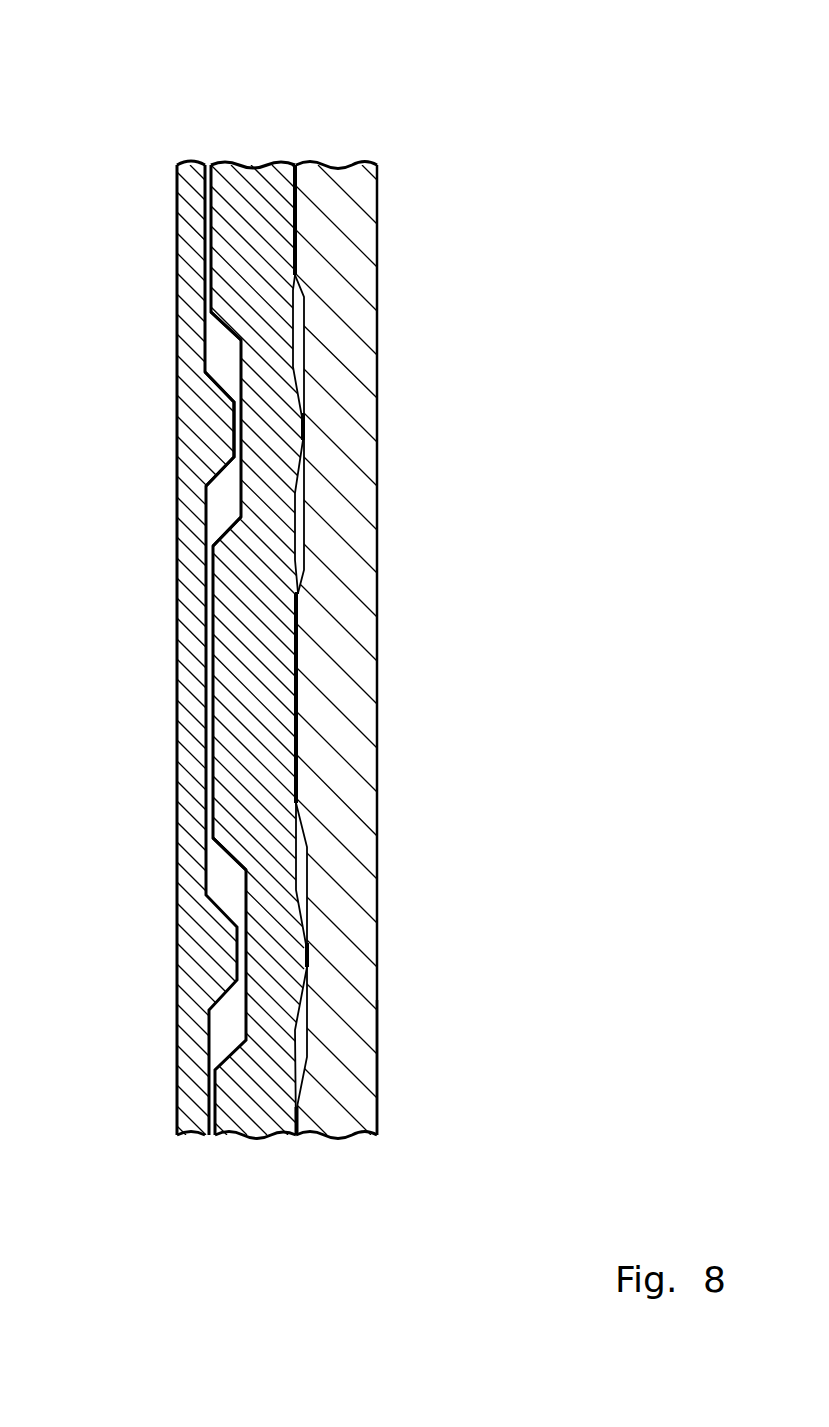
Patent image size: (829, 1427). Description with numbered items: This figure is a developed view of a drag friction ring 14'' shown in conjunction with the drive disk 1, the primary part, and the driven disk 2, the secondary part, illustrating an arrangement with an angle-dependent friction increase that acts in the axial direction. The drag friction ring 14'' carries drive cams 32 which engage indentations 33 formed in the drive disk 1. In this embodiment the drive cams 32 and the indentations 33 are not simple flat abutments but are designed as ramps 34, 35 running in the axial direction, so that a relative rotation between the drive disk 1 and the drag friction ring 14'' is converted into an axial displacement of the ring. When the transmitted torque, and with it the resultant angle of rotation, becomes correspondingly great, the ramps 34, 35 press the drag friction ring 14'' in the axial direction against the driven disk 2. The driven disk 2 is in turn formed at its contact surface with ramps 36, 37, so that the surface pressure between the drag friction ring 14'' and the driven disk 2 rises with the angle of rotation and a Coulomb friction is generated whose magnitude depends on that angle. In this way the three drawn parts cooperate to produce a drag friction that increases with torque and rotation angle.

The drive disk 1 is at (190, 197).
The drag friction ring 14'' is at (245, 575).
The driven disk 2 is at (340, 1108).
The drive cams 32 is at (246, 548).
The indentations 33 is at (227, 897).
The ramp 34 is at (222, 397).
The ramp 35 is at (224, 329).
The ramp 36 is at (310, 847).
The ramp 37 is at (378, 1058).